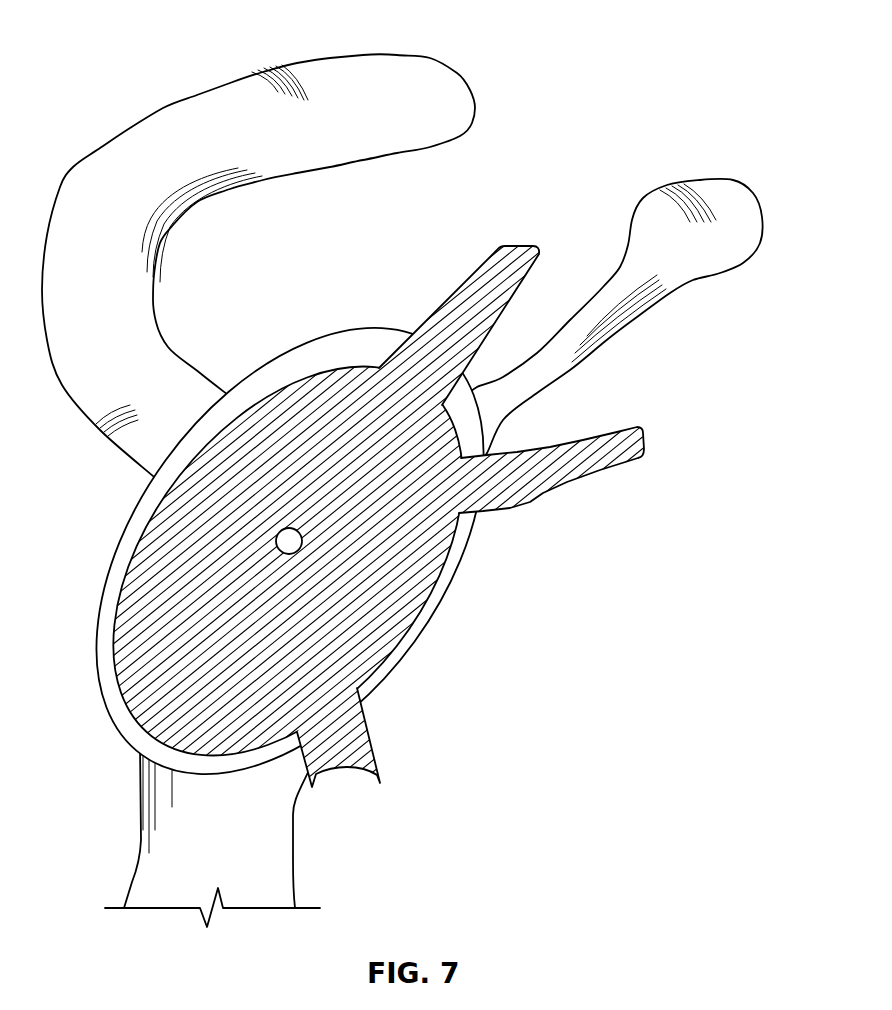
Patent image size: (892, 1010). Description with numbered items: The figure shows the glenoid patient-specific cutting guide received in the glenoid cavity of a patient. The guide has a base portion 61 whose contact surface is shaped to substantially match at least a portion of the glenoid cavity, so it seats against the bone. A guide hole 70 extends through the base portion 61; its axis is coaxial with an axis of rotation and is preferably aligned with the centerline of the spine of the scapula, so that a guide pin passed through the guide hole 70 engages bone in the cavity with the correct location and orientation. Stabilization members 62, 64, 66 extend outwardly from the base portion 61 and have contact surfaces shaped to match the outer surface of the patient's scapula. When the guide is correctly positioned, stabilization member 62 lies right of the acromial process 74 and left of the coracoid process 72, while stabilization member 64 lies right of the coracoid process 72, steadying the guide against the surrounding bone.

The base portion 61 is at (332, 643).
The stabilization member 62 is at (463, 278).
The stabilization member 64 is at (562, 484).
The stabilization member 66 is at (370, 750).
The guide hole 70 is at (282, 541).
The coracoid process 72 is at (747, 235).
The acromial process 74 is at (360, 63).